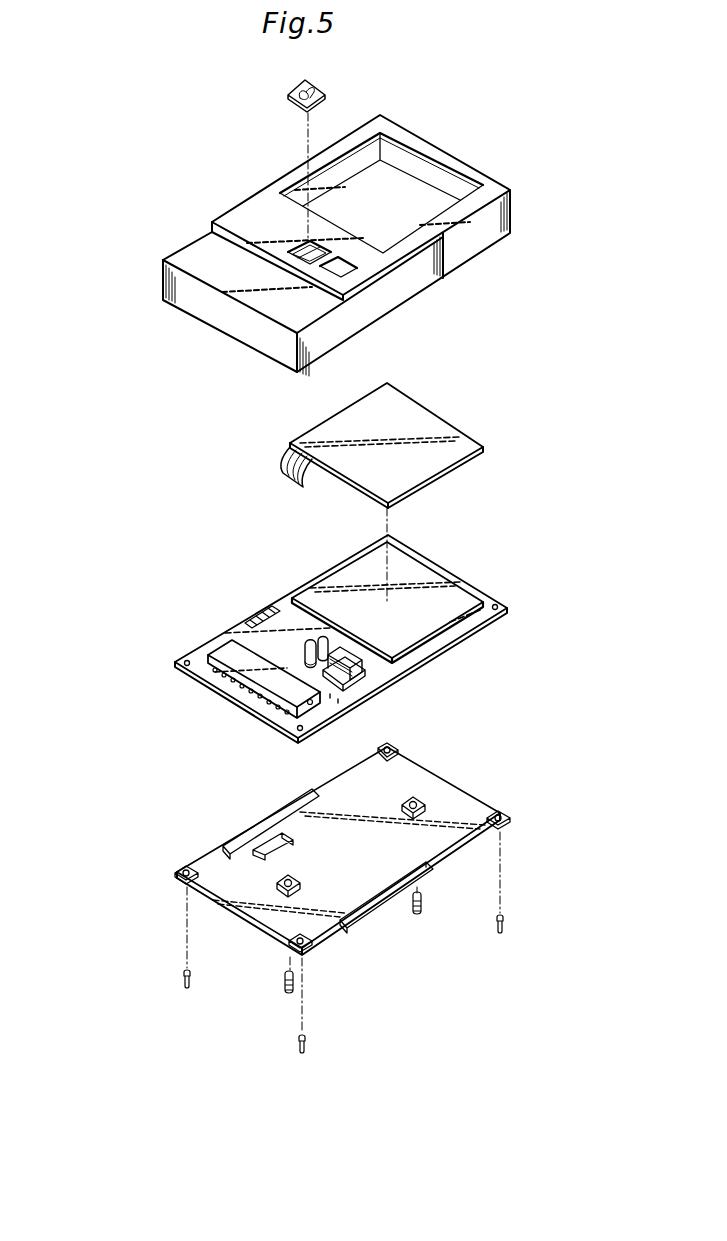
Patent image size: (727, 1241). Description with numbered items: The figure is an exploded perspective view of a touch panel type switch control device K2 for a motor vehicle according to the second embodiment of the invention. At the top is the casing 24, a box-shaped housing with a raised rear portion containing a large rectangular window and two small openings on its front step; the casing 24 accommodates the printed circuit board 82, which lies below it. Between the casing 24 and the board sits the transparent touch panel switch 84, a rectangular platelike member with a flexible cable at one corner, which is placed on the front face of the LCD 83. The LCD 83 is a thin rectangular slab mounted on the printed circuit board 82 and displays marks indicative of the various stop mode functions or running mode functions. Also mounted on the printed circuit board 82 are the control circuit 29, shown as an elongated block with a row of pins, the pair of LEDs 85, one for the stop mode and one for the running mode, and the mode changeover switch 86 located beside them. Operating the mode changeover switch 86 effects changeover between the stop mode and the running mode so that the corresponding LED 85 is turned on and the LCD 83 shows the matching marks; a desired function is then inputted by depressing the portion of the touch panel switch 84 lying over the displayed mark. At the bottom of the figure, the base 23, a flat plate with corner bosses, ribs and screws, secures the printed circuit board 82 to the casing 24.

The switch control device K2 is at (150, 456).
The casing 24 is at (443, 160).
The touch panel switch 84 is at (413, 417).
The LCD 83 is at (432, 587).
The printed circuit board 82 is at (463, 627).
The LED 85 is at (308, 647).
The mode changeover switch 86 is at (355, 663).
The control circuit 29 is at (250, 665).
The base 23 is at (445, 805).